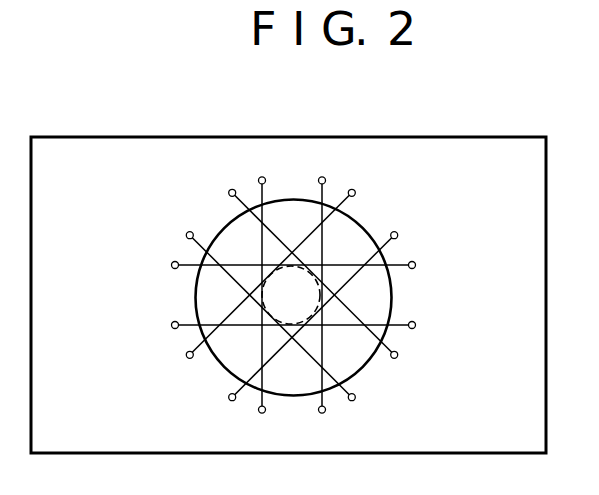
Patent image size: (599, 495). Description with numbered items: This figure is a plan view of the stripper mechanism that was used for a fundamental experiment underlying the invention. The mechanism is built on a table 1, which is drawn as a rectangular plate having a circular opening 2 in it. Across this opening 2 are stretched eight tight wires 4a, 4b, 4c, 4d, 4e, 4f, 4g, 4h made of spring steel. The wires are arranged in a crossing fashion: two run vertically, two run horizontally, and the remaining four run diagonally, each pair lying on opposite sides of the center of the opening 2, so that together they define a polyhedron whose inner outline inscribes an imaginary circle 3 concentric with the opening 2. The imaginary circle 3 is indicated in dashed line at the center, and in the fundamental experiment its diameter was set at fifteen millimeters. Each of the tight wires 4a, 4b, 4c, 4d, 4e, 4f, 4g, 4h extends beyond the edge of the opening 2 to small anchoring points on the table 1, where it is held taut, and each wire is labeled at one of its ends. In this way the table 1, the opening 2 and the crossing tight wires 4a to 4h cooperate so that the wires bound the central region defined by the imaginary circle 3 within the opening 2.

The table 1 is at (462, 138).
The opening 2 is at (362, 242).
The imaginary circle 3 is at (293, 266).
The tight wire 4a is at (397, 237).
The tight wire 4b is at (412, 269).
The tight wire 4c is at (412, 322).
The tight wire 4d is at (397, 356).
The tight wire 4e is at (354, 393).
The tight wire 4f is at (325, 411).
The tight wire 4g is at (265, 410).
The tight wire 4h is at (193, 357).